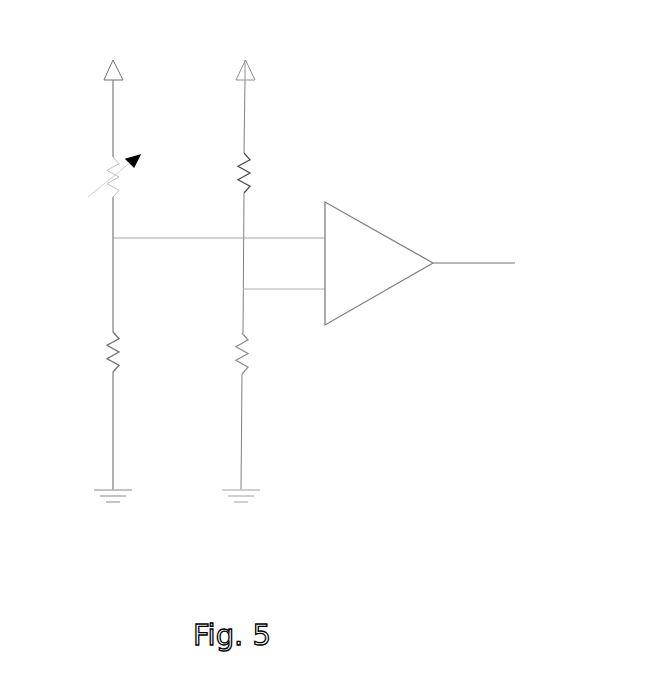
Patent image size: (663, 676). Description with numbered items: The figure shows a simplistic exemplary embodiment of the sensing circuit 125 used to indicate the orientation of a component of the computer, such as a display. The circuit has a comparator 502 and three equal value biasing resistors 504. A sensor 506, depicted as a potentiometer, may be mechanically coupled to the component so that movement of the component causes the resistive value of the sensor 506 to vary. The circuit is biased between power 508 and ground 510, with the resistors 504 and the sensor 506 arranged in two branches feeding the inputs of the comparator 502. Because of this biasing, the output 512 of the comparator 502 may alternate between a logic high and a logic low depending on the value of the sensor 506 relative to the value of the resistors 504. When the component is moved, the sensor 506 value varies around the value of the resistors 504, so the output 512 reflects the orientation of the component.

The sensing circuit 125 is at (307, 279).
The comparator 502 is at (383, 268).
The biasing resistors 504 is at (174, 271).
The sensor 506 is at (76, 176).
The power 508 is at (246, 50).
The ground 510 is at (212, 514).
The output 512 is at (517, 266).